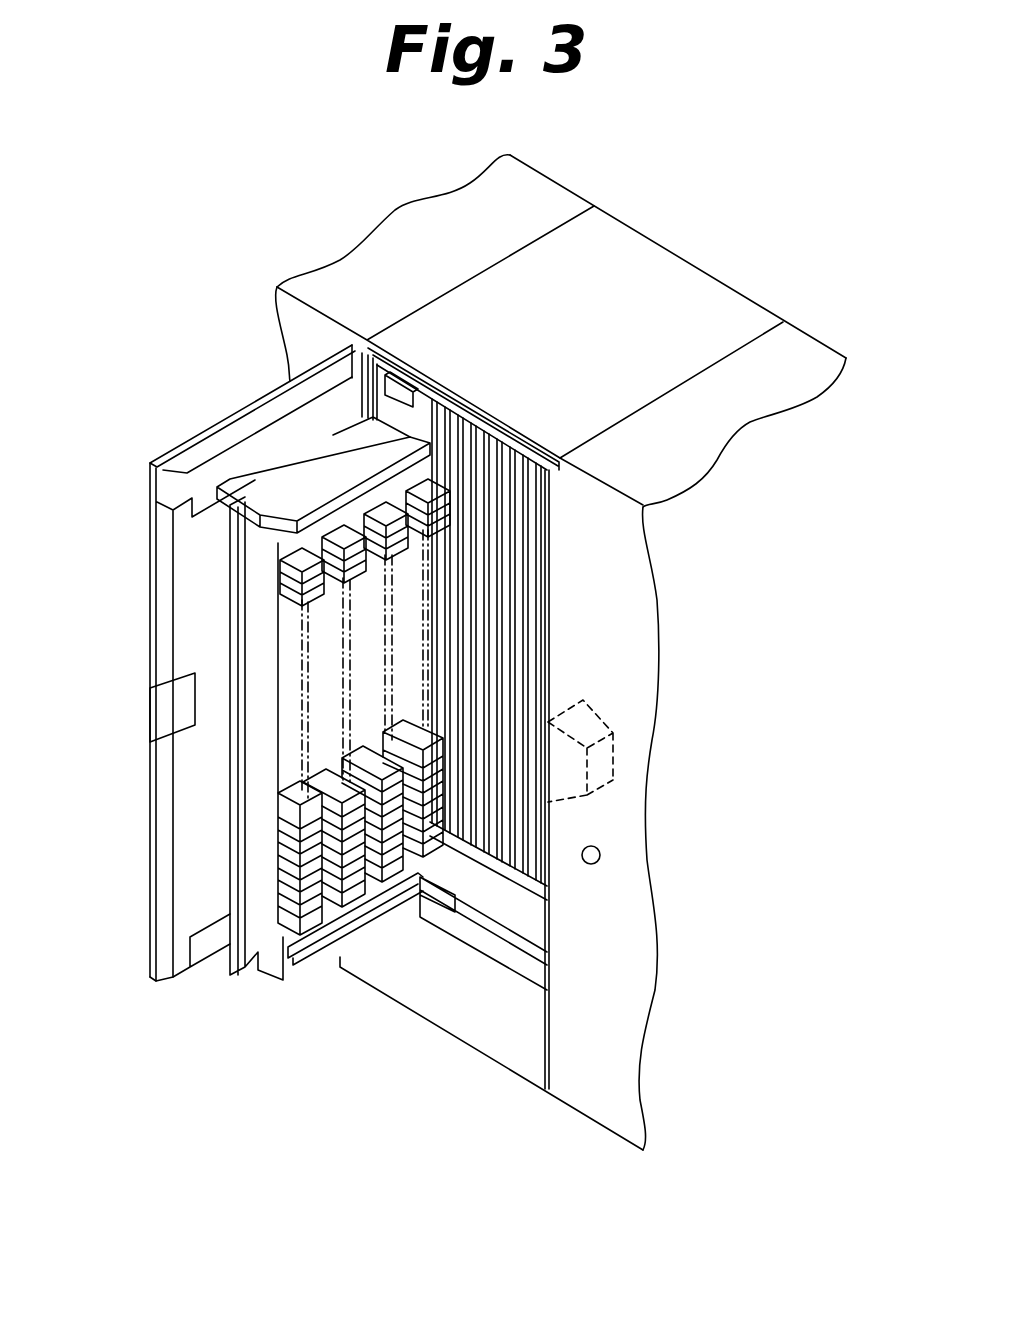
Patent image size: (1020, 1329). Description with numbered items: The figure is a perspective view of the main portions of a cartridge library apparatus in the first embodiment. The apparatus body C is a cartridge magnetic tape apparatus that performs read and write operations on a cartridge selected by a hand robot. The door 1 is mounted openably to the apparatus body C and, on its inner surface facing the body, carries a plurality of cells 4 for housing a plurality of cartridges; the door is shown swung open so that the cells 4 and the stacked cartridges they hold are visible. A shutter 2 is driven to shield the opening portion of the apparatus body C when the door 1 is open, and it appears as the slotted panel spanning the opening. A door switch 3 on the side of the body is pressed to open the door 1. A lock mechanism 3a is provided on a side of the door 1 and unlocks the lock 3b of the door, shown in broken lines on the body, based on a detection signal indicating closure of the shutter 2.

The apparatus body C is at (638, 290).
The door 1 is at (190, 440).
The shutter 2 is at (478, 430).
The door switch 3 is at (600, 856).
The lock mechanism 3a is at (163, 715).
The lock 3b is at (602, 760).
The cells 4 is at (287, 600).